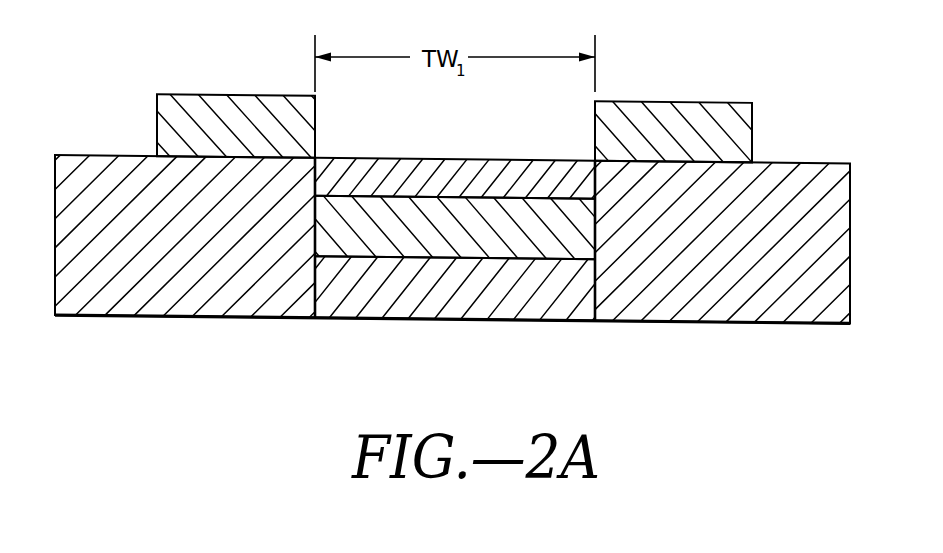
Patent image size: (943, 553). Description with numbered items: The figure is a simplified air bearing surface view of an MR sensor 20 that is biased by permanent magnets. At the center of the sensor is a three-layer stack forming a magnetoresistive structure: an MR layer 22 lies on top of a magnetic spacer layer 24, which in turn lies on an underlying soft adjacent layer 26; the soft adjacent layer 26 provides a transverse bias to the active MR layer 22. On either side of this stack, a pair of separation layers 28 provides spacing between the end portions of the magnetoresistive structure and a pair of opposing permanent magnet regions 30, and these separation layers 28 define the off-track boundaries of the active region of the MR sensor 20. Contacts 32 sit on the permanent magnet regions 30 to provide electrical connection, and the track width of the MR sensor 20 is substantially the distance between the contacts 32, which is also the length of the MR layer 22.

The MR sensor 20 is at (200, 469).
The MR layer 22 is at (459, 158).
The magnetic spacer layer 24 is at (386, 258).
The soft adjacent layer 26 is at (468, 322).
The separation layers 28 is at (313, 240).
The permanent magnet regions 30 is at (98, 155).
The contacts 32 is at (233, 95).